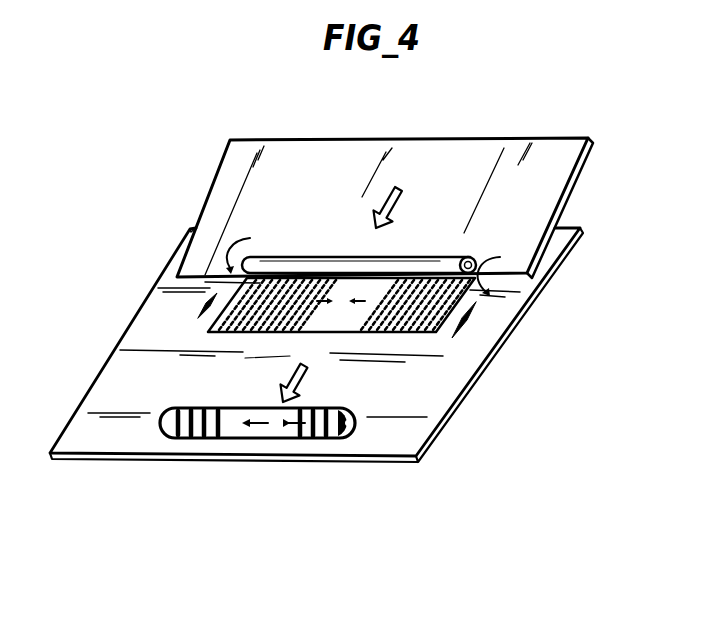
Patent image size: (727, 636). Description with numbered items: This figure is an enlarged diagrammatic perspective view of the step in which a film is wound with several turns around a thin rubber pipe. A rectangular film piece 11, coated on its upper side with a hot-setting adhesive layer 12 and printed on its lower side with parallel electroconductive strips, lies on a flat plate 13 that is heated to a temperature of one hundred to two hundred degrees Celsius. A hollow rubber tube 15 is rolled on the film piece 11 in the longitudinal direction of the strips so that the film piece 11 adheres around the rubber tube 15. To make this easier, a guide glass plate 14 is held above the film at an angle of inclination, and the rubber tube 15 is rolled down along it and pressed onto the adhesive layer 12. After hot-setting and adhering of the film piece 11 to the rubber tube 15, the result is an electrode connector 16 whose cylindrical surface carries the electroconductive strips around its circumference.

The rectangular film piece 11 is at (450, 307).
The adhesive layer 12 is at (292, 333).
The flat plate 13 is at (535, 298).
The guide glass plate 14 is at (540, 148).
The hollow rubber tube 15 is at (282, 258).
The electrode connector 16 is at (257, 438).